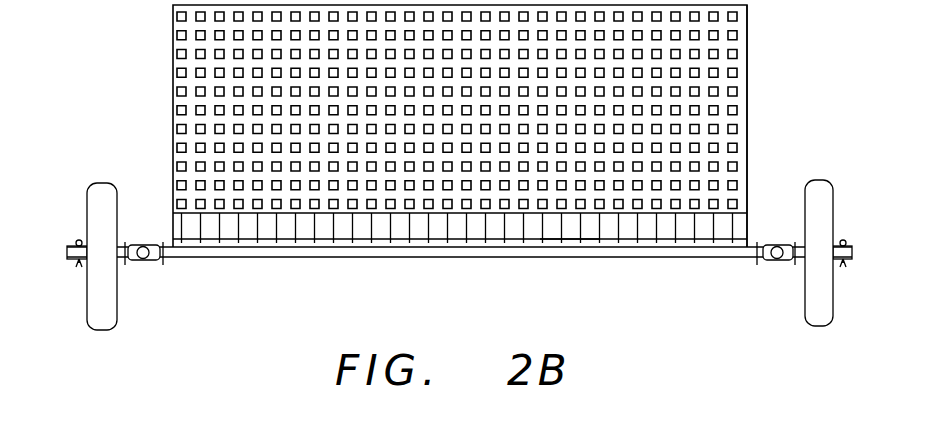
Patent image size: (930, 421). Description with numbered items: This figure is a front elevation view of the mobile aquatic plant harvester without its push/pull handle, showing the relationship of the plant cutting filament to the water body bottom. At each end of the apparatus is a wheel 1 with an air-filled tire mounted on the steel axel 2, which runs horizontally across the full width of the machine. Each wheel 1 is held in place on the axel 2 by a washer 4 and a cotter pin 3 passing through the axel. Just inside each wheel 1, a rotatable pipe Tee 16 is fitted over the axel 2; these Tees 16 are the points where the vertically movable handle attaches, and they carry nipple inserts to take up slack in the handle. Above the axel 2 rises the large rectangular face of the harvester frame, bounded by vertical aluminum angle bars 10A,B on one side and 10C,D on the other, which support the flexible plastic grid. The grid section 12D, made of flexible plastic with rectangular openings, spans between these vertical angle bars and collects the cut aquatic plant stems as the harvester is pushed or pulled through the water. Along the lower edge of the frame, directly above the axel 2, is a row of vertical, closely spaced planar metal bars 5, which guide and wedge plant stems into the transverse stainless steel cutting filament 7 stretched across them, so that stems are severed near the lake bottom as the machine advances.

The wheels 1 is at (97, 310).
The axel 2 is at (67, 252).
The cotter pin 3 is at (77, 266).
The washers 4 is at (83, 240).
The planar bars 5 is at (370, 229).
The cutting filament 7 is at (570, 239).
The pipe Tees 16 is at (133, 265).
The vertical aluminum angle bars 10A,B is at (173, 13).
The vertical aluminum angle bars 10C,D is at (747, 13).
The flexible plastic grid section 12D is at (705, 70).